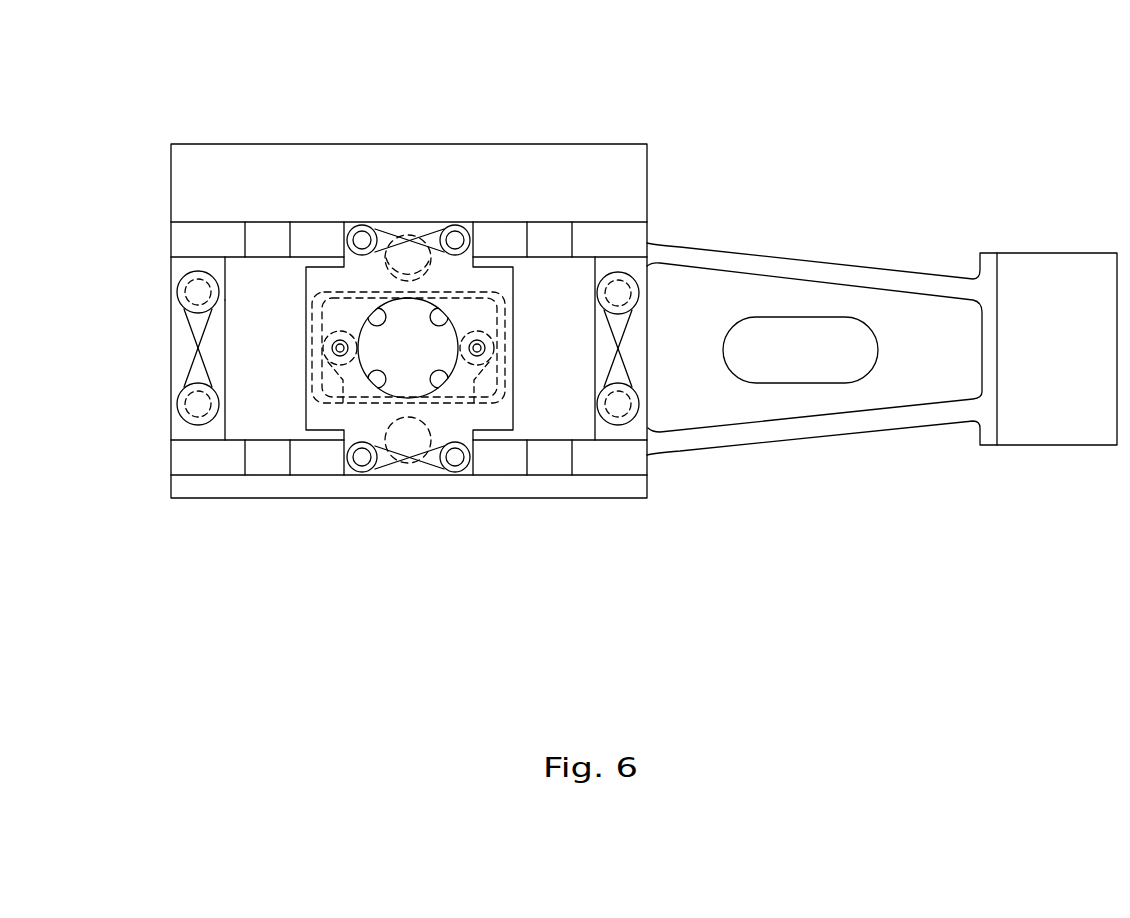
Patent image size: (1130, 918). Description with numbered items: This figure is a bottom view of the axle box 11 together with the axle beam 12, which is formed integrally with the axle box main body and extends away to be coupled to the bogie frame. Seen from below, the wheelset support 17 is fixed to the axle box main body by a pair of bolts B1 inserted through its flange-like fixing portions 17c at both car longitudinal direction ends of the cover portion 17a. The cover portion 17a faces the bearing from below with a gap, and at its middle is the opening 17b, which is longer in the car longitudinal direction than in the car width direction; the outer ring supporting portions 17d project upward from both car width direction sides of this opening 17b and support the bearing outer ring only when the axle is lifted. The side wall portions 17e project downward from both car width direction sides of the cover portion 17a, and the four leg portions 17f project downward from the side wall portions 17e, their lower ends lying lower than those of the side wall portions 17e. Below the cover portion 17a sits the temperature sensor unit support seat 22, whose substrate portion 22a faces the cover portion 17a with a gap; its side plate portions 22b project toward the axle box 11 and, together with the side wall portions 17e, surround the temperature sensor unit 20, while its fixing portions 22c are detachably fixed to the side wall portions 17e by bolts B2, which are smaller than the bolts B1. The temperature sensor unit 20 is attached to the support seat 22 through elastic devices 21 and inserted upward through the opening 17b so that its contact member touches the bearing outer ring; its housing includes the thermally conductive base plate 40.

The axle box 11 is at (628, 142).
The axle beam 12 is at (915, 265).
The wheelset support 17 is at (171, 240).
The cover portion 17a is at (260, 412).
The opening 17b is at (334, 252).
The fixing portions 17c is at (178, 333).
The outer ring supporting portions 17d is at (412, 222).
The side wall portions 17e is at (500, 237).
The leg portions 17f is at (268, 237).
The temperature sensor unit 20 is at (428, 327).
The elastic devices 21 is at (345, 395).
The temperature sensor unit support seat 22 is at (298, 410).
The substrate portion 22a is at (490, 417).
The side plate portions 22b is at (307, 305).
The fixing portions 22c is at (390, 230).
The base plate 40 is at (330, 366).
The bolts B1 is at (178, 287).
The bolts B2 is at (365, 228).